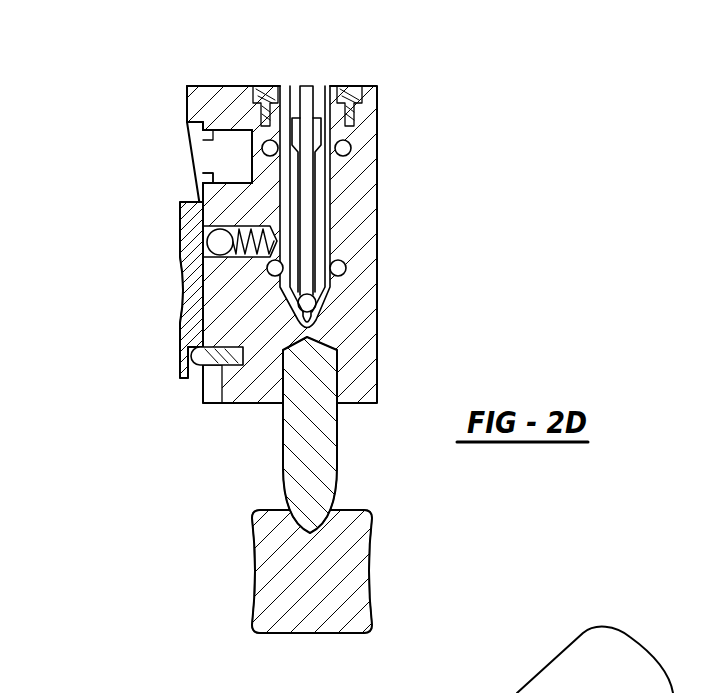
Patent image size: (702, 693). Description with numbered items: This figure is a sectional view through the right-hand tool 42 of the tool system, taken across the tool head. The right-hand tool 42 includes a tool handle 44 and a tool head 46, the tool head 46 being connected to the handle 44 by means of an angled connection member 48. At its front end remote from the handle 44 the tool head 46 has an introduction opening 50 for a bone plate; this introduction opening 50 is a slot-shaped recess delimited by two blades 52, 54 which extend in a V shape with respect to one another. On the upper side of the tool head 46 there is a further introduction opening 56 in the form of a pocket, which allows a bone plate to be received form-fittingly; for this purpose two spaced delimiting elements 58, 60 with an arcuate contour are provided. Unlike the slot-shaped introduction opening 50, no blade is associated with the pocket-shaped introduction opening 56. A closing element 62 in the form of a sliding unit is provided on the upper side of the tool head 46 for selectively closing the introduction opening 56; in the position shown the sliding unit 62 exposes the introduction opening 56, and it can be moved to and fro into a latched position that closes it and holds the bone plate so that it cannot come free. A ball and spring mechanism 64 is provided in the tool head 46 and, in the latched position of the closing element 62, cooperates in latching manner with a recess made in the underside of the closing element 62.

The right-hand tool 42 is at (151, 484).
The tool handle 44 is at (328, 580).
The tool head 46 is at (352, 230).
The angled connection member 48 is at (308, 458).
The introduction opening 50 is at (308, 98).
The blade 52 is at (310, 197).
The blade 54 is at (305, 172).
The introduction opening 56 is at (210, 160).
The delimiting element 58 is at (203, 142).
The delimiting element 60 is at (203, 182).
The closing element 62 is at (183, 273).
The ball and spring mechanism 64 is at (220, 258).